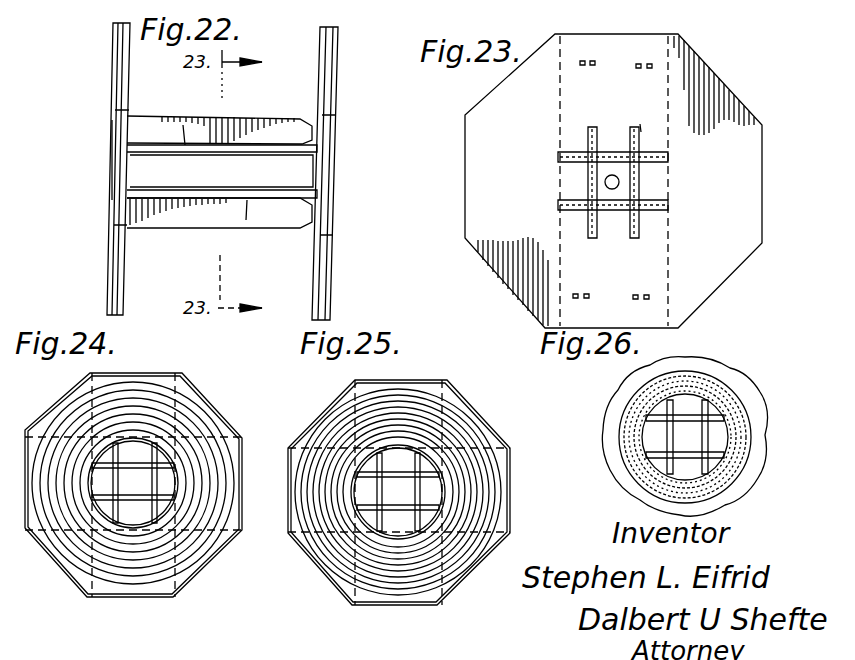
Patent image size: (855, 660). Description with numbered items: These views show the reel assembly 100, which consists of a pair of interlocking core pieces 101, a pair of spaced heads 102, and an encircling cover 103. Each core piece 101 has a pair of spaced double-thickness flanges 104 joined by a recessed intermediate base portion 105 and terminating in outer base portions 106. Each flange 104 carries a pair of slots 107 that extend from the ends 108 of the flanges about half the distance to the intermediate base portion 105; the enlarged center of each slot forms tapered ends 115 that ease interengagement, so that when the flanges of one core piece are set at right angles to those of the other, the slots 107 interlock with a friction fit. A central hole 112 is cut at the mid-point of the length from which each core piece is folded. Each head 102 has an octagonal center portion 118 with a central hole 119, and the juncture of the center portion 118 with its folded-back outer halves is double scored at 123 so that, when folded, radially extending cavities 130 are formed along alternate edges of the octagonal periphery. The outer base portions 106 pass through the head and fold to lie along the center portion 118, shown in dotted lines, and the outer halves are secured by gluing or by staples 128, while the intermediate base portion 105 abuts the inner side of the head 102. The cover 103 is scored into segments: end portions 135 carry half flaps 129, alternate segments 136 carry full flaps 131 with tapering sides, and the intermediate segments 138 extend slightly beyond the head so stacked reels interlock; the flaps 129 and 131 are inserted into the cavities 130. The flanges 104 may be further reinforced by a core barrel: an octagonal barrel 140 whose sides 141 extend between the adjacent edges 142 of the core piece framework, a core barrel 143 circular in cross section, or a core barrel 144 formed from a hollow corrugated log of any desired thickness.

In FIG. 22, the reel assembly 100 is at (86, 169).
In FIG. 22, the core piece 101 is at (149, 117).
In FIG. 22, the head 102 is at (333, 116).
In FIG. 23, the head 102 is at (712, 72).
In FIG. 24, the head 102 is at (232, 440).
In FIG. 25, the head 102 is at (505, 458).
In FIG. 26, the head 102 is at (760, 435).
In FIG. 24, the cover 103 is at (62, 393).
In FIG. 25, the cover 103 is at (455, 382).
In FIG. 22, the flange 104 is at (255, 130).
In FIG. 23, the flange 104 is at (640, 180).
In FIG. 24, the flange 104 is at (133, 483).
In FIG. 25, the flange 104 is at (398, 491).
In FIG. 26, the flange 104 is at (690, 420).
In FIG. 22, the intermediate base portion 105 is at (318, 160).
In FIG. 23, the intermediate base portion 105 is at (662, 197).
In FIG. 23, the outer base portion 106 is at (635, 50).
In FIG. 22, the slot 107 is at (186, 143).
In FIG. 23, the slot 107 is at (640, 152).
In FIG. 22, the end of flange 108 is at (312, 163).
In FIG. 23, the central hole 112 is at (614, 175).
In FIG. 22, the tapered end 115 is at (305, 122).
In FIG. 23, the center portion 118 is at (725, 118).
In FIG. 23, the central hole 119 is at (640, 128).
In FIG. 22, the double scoring 123 is at (112, 29).
In FIG. 23, the staple 128 is at (593, 62).
In FIG. 25, the half flap 129 is at (470, 430).
In FIG. 22, the cavity 130 is at (124, 71).
In FIG. 24, the flap 131 is at (40, 415).
In FIG. 25, the flap 131 is at (333, 398).
In FIG. 24, the end portion 135 is at (186, 382).
In FIG. 25, the end portion 135 is at (466, 410).
In FIG. 24, the segment 136 is at (72, 380).
In FIG. 25, the segment 136 is at (322, 388).
In FIG. 24, the segment 138 is at (153, 373).
In FIG. 25, the segment 138 is at (512, 494).
In FIG. 24, the barrel 140 is at (125, 522).
In FIG. 24, the side 141 is at (165, 520).
In FIG. 24, the edge 142 is at (115, 525).
In FIG. 25, the core barrel 143 is at (405, 445).
In FIG. 26, the core barrel 144 is at (727, 398).